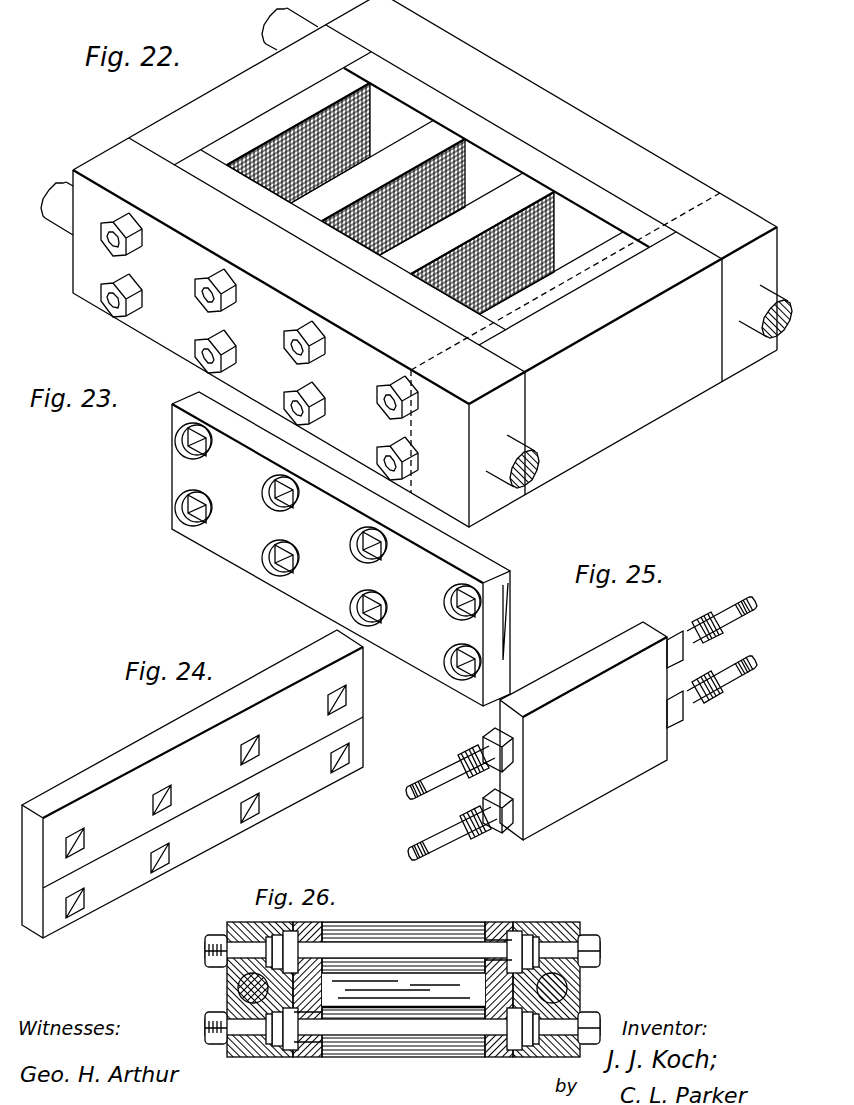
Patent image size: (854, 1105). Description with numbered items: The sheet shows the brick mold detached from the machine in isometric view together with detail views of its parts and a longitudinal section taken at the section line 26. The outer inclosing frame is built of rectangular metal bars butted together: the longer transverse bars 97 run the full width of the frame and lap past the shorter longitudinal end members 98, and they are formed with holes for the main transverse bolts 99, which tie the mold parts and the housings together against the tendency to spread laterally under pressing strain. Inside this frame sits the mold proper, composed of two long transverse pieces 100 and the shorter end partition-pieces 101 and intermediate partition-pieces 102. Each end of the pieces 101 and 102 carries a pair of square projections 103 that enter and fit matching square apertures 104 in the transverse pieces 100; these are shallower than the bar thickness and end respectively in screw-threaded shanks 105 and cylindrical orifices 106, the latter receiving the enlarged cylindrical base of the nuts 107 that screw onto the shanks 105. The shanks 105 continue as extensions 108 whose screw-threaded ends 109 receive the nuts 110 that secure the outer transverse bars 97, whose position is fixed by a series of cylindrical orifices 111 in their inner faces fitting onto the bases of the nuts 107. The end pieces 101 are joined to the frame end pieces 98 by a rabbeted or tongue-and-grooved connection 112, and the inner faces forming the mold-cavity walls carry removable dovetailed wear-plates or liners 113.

In FIG. 22, the section line 26 is at (574, 340).
In FIG. 22, the transverse bar 97 is at (425, 263).
In FIG. 23, the transverse bar 97 is at (341, 549).
In FIG. 26, the transverse bar 97 is at (403, 1003).
In FIG. 22, the longitudinal end member 98 is at (475, 289).
In FIG. 22, the main transverse bolt 99 is at (412, 248).
In FIG. 26, the main transverse bolt 99 is at (567, 990).
In FIG. 22, the long transverse piece 100 is at (422, 197).
In FIG. 24, the long transverse piece 100 is at (192, 784).
In FIG. 26, the long transverse piece 100 is at (488, 1058).
In FIG. 22, the end partition-piece 101 is at (425, 199).
In FIG. 26, the end partition-piece 101 is at (403, 989).
In FIG. 22, the intermediate partition-piece 102 is at (390, 198).
In FIG. 25, the intermediate partition-piece 102 is at (583, 731).
In FIG. 25, the square projection 103 is at (489, 734).
In FIG. 26, the square projection 103 is at (493, 948).
In FIG. 23, the square aperture 104 is at (290, 497).
In FIG. 24, the square aperture 104 is at (260, 797).
In FIG. 26, the square aperture 104 is at (313, 1042).
In FIG. 25, the screw-threaded shank 105 is at (470, 757).
In FIG. 23, the cylindrical orifice 106 is at (271, 500).
In FIG. 26, the cylindrical orifice 106 is at (514, 930).
In FIG. 26, the nut 107 is at (537, 938).
In FIG. 25, the extension 108 is at (449, 773).
In FIG. 26, the extension 108 is at (580, 960).
In FIG. 22, the screw-threaded end 109 is at (110, 308).
In FIG. 25, the screw-threaded end 109 is at (413, 795).
In FIG. 26, the screw-threaded end 109 is at (190, 987).
In FIG. 22, the nut 110 is at (393, 394).
In FIG. 26, the nut 110 is at (600, 946).
In FIG. 26, the cylindrical orifice 111 is at (527, 935).
In FIG. 26, the rabbeted connection 112 is at (403, 990).
In FIG. 23, the wear-plate 113 is at (529, 621).
In FIG. 24, the wear-plate 113 is at (203, 802).
In FIG. 25, the wear-plate 113 is at (595, 738).